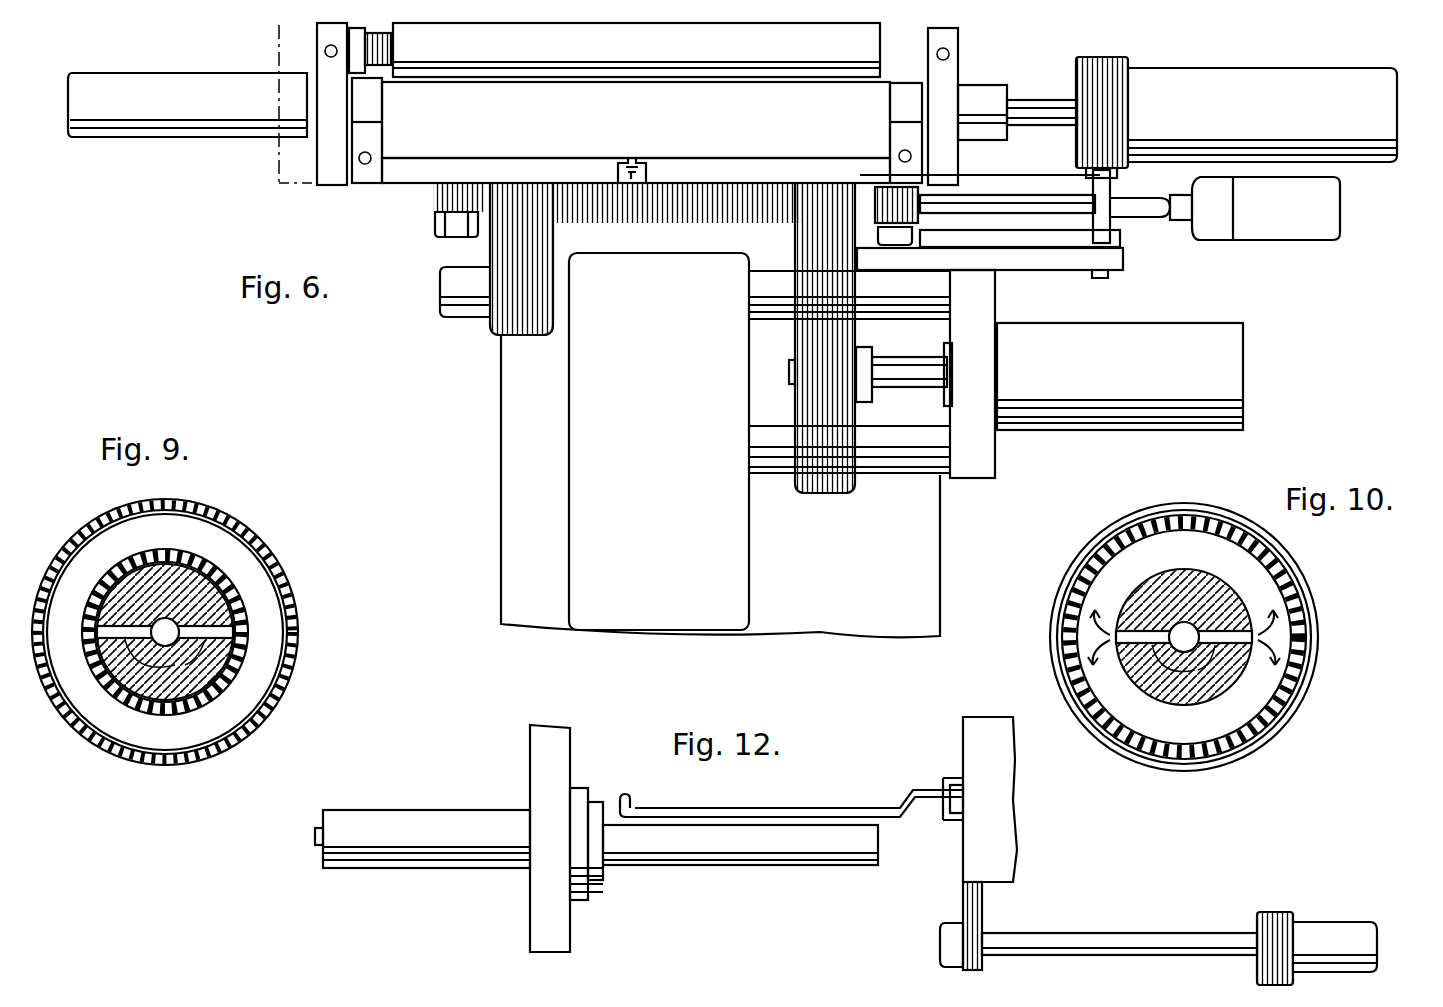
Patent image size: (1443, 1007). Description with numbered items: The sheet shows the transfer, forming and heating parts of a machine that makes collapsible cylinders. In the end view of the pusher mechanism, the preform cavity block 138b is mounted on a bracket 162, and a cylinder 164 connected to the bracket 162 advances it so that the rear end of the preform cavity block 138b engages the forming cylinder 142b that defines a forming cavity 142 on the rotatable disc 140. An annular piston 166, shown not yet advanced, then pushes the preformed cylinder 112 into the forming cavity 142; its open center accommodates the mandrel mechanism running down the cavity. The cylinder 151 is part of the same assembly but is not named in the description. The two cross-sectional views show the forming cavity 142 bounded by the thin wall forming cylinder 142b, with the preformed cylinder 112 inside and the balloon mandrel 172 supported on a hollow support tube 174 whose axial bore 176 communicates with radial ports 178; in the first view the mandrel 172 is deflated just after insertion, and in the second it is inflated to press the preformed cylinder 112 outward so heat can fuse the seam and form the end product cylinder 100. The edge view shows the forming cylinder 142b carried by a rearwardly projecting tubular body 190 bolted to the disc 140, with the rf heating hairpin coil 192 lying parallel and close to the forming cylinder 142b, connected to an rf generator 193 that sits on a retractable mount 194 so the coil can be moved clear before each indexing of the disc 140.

In FIG. 10, the end product cylinder 100 is at (1248, 745).
In FIG. 9, the preformed cylinder 112 is at (283, 648).
In FIG. 10, the preformed cylinder 112 is at (1305, 660).
In FIG. 6, the preform cavity block 138b is at (648, 130).
In FIG. 12, the rotatable disc 140 is at (537, 752).
In FIG. 9, the forming cavity 142 is at (268, 617).
In FIG. 6, the forming cylinder 142b is at (172, 137).
In FIG. 9, the forming cylinder 142b is at (284, 688).
In FIG. 10, the forming cylinder 142b is at (1296, 712).
In FIG. 12, the forming cylinder 142b is at (673, 843).
In FIG. 6, the cylinder 151 is at (640, 58).
In FIG. 6, the bracket 162 is at (848, 487).
In FIG. 6, the cylinder 164 is at (1046, 428).
In FIG. 6, the piston 166 is at (997, 90).
In FIG. 9, the balloon mandrel 172 is at (238, 606).
In FIG. 10, the balloon mandrel 172 is at (1300, 605).
In FIG. 9, the support tube 174 is at (205, 600).
In FIG. 10, the support tube 174 is at (1228, 600).
In FIG. 9, the axial bore 176 is at (165, 617).
In FIG. 10, the axial bore 176 is at (1184, 622).
In FIG. 9, the radial ports 178 is at (165, 662).
In FIG. 10, the radial ports 178 is at (1183, 666).
In FIG. 12, the tubular body 190 is at (415, 818).
In FIG. 12, the rf heating hairpin coil 192 is at (828, 812).
In FIG. 12, the rf generator 193 is at (1005, 827).
In FIG. 12, the retractable mount 194 is at (963, 903).